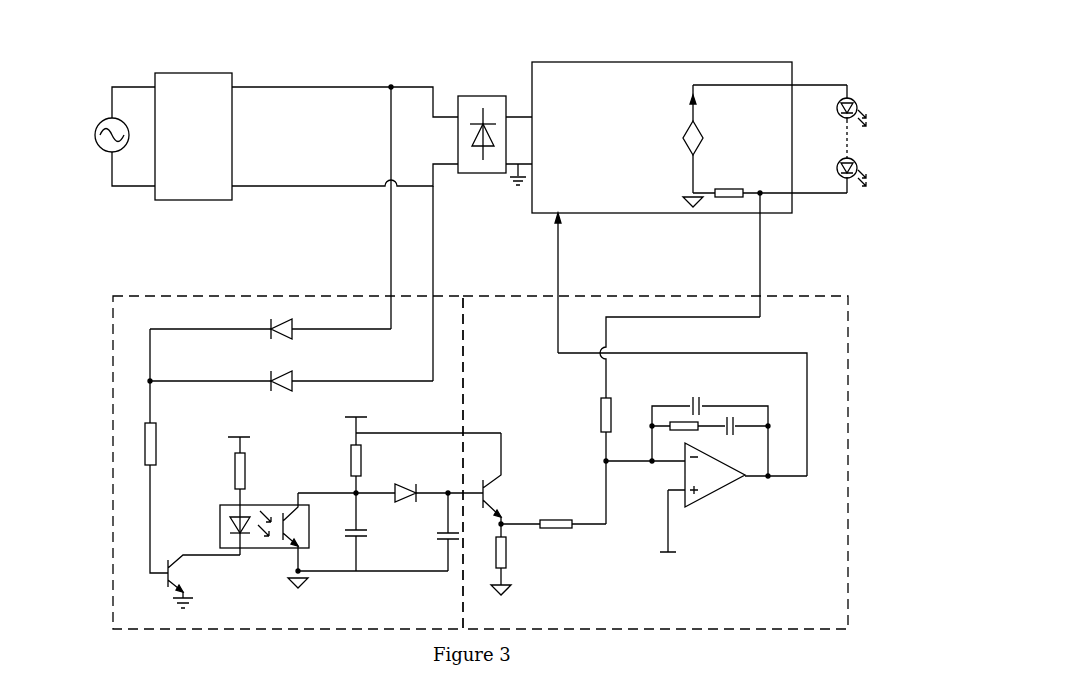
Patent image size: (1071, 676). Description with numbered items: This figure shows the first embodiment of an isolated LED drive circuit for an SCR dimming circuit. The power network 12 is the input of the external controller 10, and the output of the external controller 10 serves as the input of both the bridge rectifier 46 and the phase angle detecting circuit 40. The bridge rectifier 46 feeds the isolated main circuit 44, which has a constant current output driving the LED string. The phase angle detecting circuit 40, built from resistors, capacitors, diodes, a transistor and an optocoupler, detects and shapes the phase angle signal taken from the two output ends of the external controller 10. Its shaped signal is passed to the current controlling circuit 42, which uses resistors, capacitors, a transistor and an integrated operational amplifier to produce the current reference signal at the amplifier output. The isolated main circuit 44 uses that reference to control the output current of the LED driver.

The external controller 10 is at (197, 73).
The power network 12 is at (100, 118).
The phase angle detecting circuit 40 is at (113, 296).
The current controlling circuit 42 is at (822, 296).
The isolated main circuit 44 is at (697, 62).
The bridge rectifier 46 is at (483, 96).